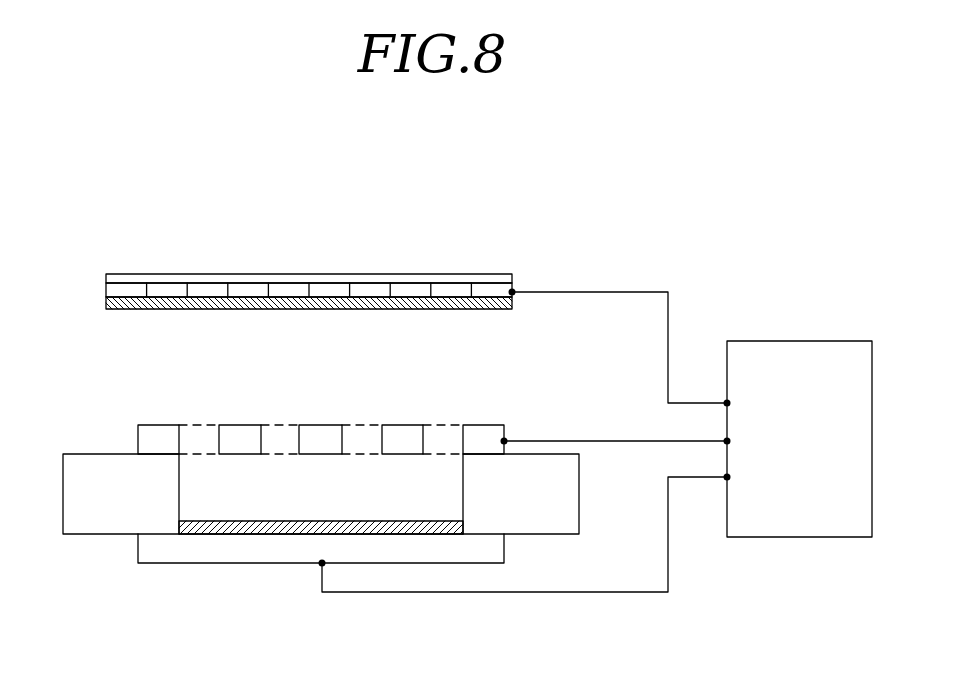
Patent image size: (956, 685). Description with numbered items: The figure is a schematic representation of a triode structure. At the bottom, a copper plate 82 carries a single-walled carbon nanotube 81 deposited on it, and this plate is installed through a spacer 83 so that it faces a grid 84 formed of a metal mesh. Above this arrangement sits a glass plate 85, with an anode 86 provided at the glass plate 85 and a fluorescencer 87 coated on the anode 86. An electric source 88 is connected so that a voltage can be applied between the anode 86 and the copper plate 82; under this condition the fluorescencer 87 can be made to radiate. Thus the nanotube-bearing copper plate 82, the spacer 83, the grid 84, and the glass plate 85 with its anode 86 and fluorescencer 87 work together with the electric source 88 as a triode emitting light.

The single-walled carbon nanotube 81 is at (252, 535).
The copper plate 82 is at (165, 563).
The spacer 83 is at (85, 535).
The grid 84 is at (138, 428).
The glass plate 85 is at (120, 273).
The anode 86 is at (106, 289).
The fluorescencer 87 is at (117, 310).
The electric source 88 is at (813, 341).